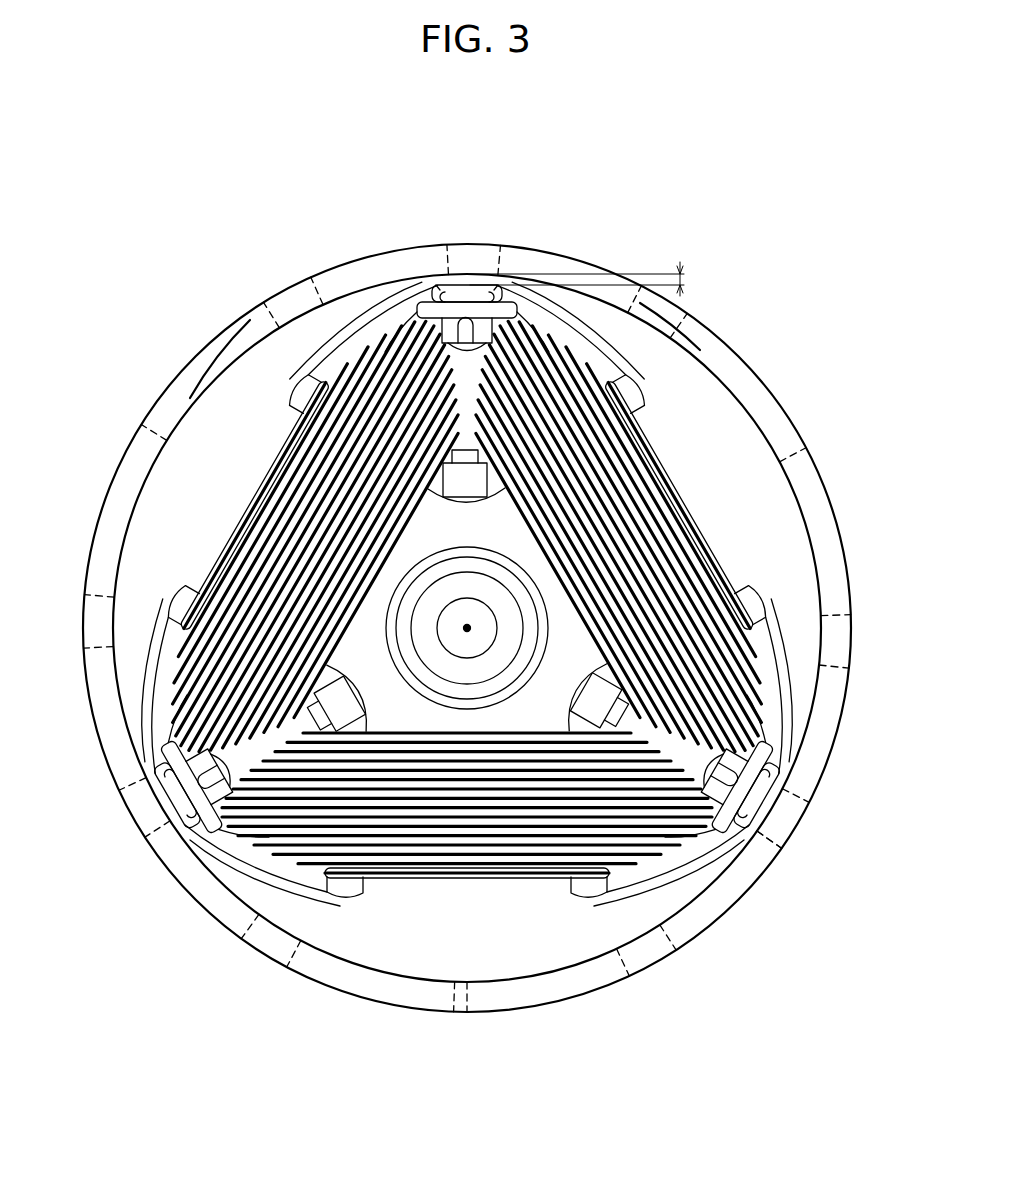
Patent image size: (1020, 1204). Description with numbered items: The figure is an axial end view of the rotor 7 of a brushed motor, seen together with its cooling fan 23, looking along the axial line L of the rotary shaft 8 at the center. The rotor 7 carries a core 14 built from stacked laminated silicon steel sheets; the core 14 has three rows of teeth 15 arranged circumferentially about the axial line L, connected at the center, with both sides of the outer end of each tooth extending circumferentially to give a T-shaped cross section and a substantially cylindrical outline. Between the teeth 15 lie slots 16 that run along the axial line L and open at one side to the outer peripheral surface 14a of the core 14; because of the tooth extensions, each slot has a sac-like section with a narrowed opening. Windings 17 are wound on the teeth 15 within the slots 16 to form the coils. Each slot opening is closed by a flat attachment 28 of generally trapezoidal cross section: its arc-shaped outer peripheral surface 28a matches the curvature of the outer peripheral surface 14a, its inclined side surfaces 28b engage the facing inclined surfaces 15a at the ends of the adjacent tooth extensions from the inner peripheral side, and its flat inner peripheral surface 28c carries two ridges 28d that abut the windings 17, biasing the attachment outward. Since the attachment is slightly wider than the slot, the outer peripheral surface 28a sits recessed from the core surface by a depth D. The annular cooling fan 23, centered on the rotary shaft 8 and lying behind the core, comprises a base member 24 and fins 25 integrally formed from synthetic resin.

The rotor 7 is at (700, 240).
The rotary shaft 8 is at (488, 645).
The core 14 is at (690, 352).
The outer peripheral surface 14a is at (718, 385).
The teeth 15 is at (205, 428).
The inclined surfaces 15a is at (447, 285).
The slots 16 is at (346, 352).
The windings 17 is at (250, 545).
The cooling fan 23 is at (241, 310).
The base member 24 is at (222, 348).
The fins 25 is at (832, 862).
The flat attachment 28 is at (465, 527).
The outer peripheral surface 28a is at (490, 284).
The side surfaces 28b is at (428, 292).
The inner peripheral surface 28c is at (518, 310).
The ridges 28d is at (430, 335).
The depth D is at (585, 279).
The axial line L is at (462, 634).